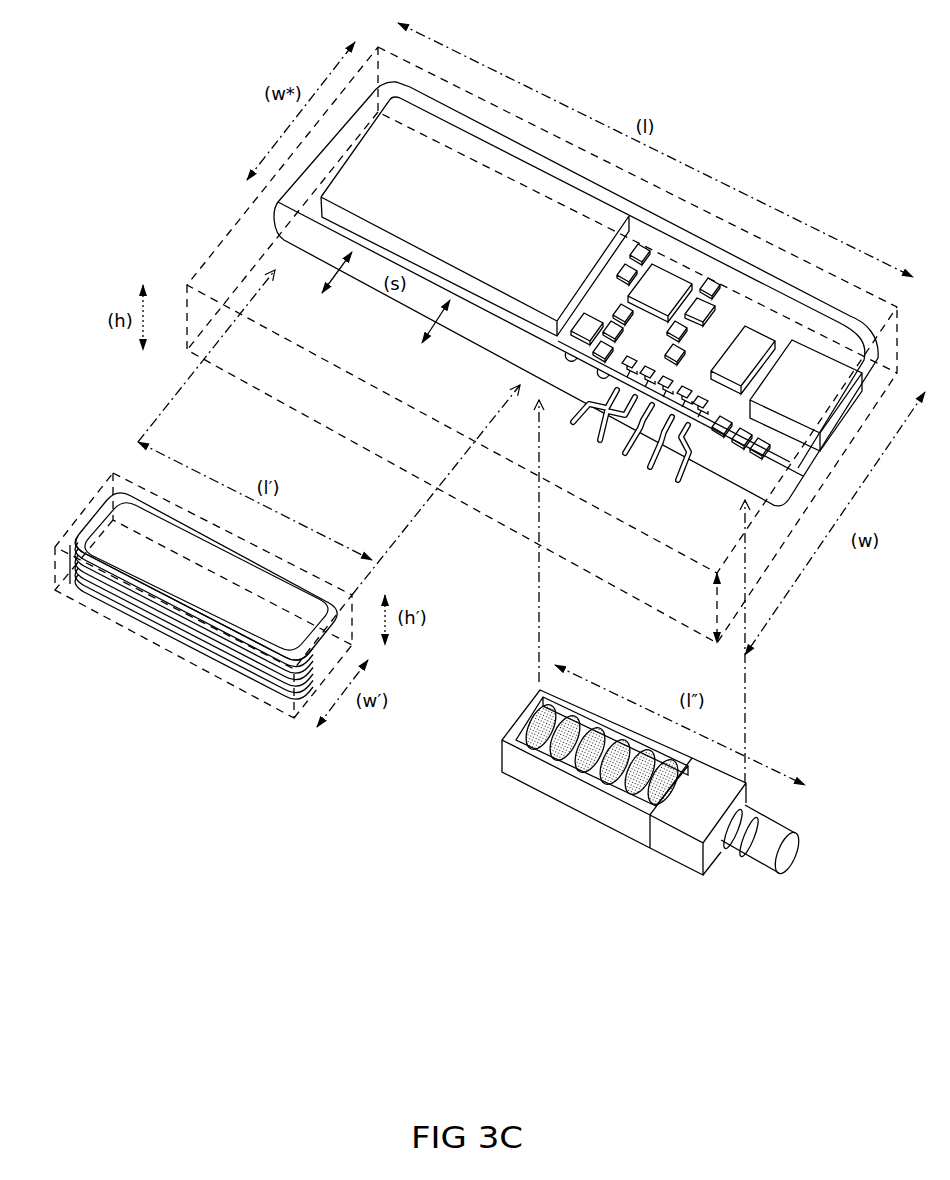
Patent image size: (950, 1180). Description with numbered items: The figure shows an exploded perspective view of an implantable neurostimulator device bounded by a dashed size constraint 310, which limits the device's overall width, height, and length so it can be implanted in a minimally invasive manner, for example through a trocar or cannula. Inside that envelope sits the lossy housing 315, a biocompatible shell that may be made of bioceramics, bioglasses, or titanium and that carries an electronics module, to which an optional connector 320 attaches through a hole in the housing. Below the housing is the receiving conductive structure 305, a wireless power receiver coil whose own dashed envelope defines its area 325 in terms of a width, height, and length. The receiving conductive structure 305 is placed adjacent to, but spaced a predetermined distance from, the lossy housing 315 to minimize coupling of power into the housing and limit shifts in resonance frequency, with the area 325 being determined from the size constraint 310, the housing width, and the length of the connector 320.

The receiving conductive structure 305 is at (182, 623).
The size constraint 310 is at (210, 260).
The lossy housing 315 is at (720, 268).
The connector 320 is at (588, 806).
The area 325 is at (197, 668).